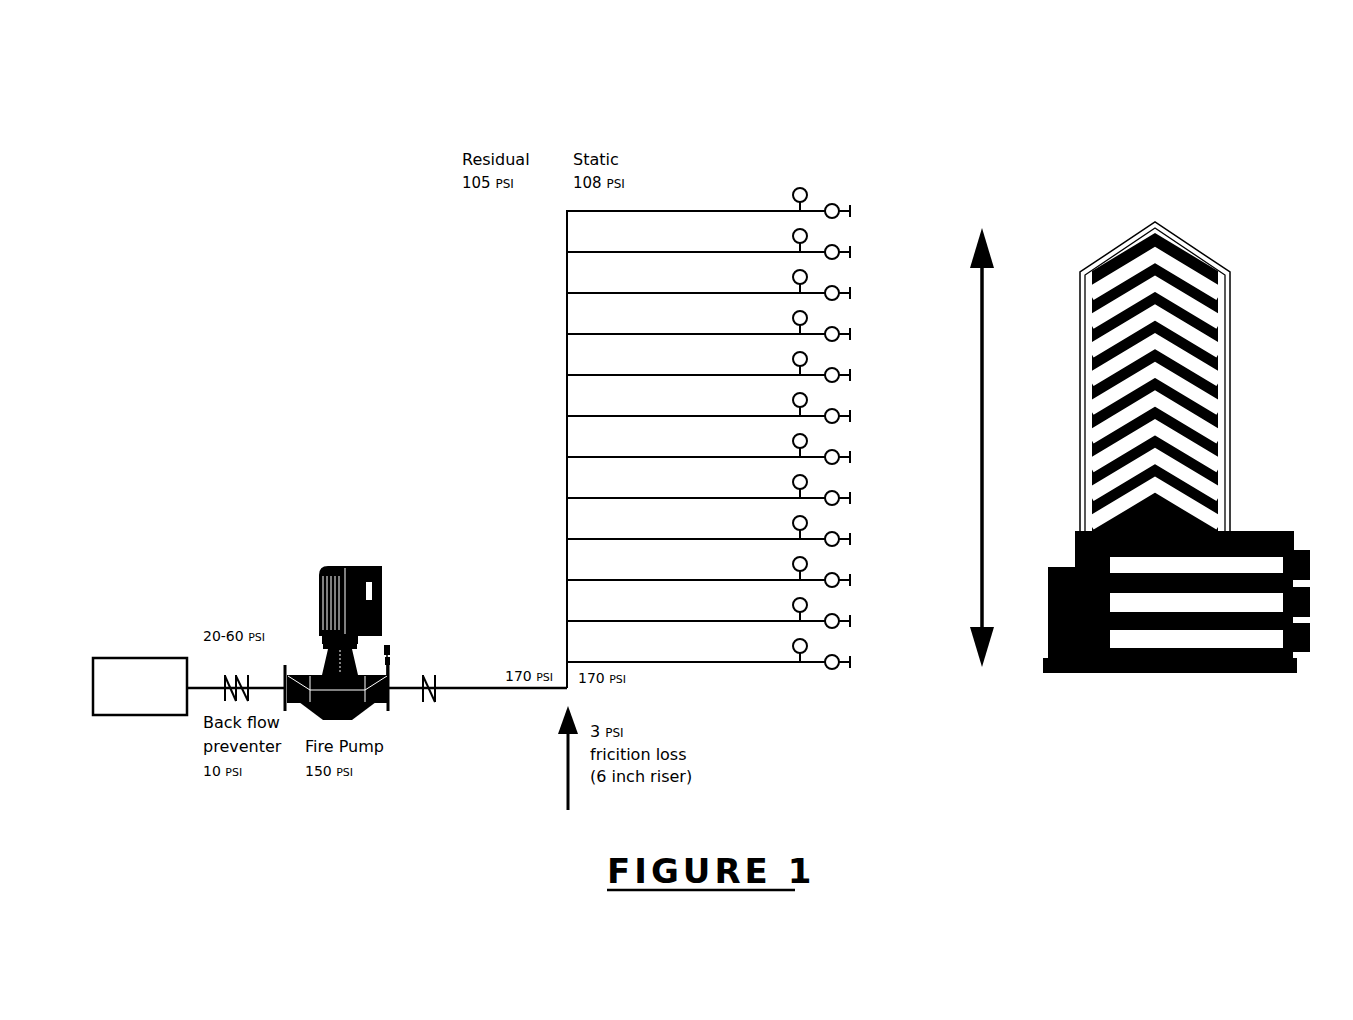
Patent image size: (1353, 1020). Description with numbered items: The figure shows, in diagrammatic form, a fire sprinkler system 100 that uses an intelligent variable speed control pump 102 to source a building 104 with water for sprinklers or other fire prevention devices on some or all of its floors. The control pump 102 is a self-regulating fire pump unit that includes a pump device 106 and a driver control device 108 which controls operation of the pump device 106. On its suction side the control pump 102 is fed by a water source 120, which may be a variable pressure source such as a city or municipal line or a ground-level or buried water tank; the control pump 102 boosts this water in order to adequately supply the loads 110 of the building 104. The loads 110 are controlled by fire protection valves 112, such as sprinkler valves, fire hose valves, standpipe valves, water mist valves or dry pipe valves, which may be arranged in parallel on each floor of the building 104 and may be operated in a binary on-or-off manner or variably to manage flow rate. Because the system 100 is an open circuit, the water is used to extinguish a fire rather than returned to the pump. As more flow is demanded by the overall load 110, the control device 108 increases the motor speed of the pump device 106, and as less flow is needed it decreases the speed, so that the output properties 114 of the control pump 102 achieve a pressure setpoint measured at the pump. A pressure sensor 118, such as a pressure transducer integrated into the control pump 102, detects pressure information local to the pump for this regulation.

The fire sprinkler system 100 is at (284, 82).
The control pump 102 is at (310, 554).
The building 104 is at (1110, 236).
The pump device 106 is at (289, 708).
The driver control device 108 is at (358, 564).
The loads 110 is at (861, 197).
The fire protection valves 112 is at (822, 177).
The output properties 114 is at (403, 687).
The pressure sensor 118 is at (389, 645).
The water source 120 is at (176, 658).